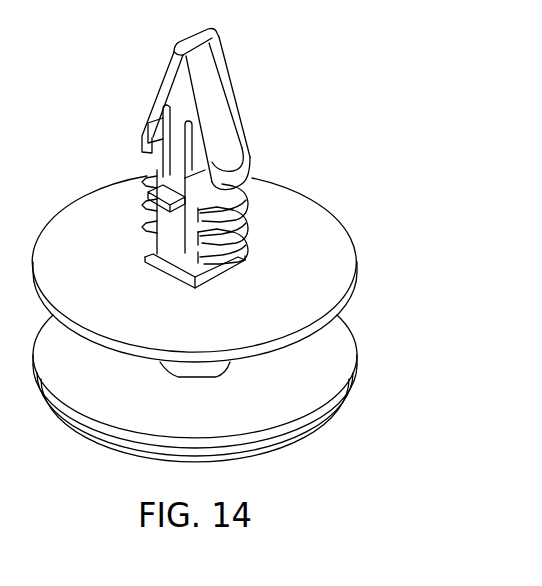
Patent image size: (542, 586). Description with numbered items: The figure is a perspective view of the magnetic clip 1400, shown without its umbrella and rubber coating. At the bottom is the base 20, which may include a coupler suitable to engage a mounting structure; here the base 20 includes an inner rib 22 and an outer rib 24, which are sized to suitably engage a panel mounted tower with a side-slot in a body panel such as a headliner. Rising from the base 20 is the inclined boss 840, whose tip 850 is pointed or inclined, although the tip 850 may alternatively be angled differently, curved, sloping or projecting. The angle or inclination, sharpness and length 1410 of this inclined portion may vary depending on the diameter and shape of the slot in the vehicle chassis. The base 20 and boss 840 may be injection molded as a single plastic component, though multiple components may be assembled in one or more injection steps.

The magnetic clip 1400 is at (393, 105).
The base 20 is at (393, 240).
The inner rib 22 is at (347, 258).
The outer rib 24 is at (347, 378).
The boss 840 is at (172, 176).
The tip 850 is at (198, 41).
The length 1410 is at (223, 18).